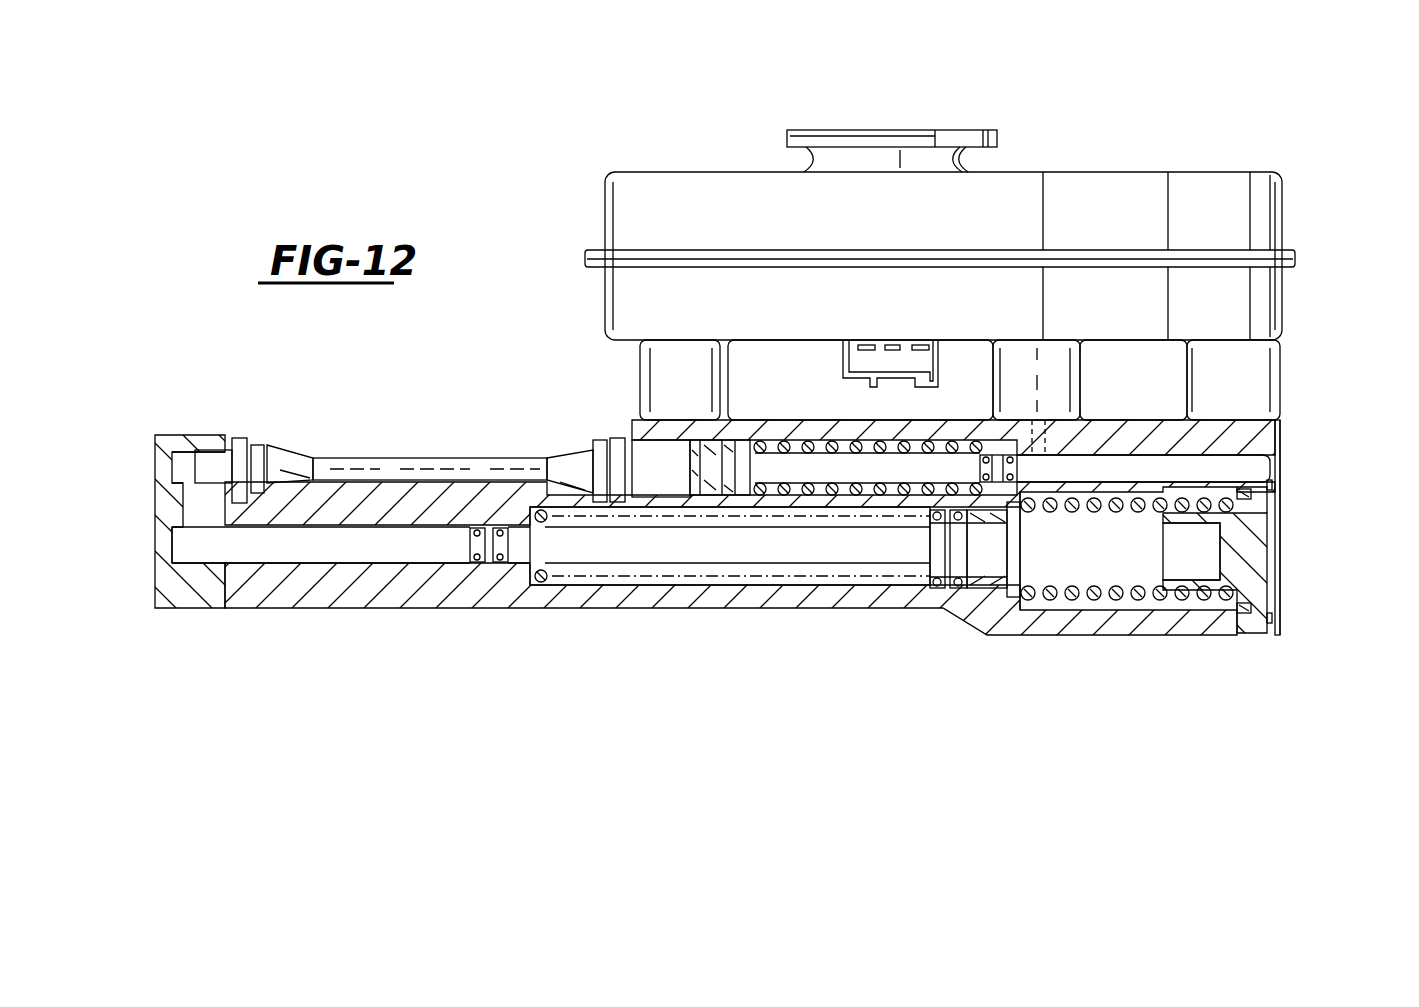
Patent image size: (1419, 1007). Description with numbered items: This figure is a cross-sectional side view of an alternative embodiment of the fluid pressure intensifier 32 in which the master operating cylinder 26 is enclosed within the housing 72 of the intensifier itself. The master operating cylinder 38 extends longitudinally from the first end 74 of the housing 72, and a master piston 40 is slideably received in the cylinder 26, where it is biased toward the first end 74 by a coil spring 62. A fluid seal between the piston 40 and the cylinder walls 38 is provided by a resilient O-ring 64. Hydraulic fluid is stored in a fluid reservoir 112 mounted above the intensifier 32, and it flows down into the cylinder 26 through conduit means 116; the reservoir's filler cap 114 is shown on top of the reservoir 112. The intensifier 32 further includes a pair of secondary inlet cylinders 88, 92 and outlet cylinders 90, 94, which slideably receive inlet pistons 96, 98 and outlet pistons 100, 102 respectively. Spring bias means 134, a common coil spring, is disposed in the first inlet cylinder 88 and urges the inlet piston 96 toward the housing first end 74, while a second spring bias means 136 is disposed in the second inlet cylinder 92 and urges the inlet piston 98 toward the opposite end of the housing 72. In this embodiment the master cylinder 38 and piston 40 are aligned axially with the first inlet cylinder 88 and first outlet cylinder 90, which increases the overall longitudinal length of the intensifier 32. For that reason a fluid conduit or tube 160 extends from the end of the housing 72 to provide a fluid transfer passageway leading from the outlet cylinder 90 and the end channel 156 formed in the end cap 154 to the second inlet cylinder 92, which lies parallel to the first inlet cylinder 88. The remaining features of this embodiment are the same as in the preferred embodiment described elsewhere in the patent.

The master operating cylinder 26 is at (1292, 578).
The fluid pressure intensifier 32 is at (1260, 146).
The master operating cylinder 38 is at (1060, 601).
The master piston 40 is at (1250, 527).
The coil spring 62 is at (1172, 596).
The resilient O-ring 64 is at (1240, 620).
The housing 72 is at (718, 617).
The first end 74 is at (1274, 503).
The first inlet cylinder 88 is at (798, 574).
The first outlet cylinder 90 is at (347, 563).
The second inlet cylinder 92 is at (800, 447).
The second outlet cylinder 94 is at (1275, 462).
The inlet piston 96 is at (933, 590).
The inlet piston 98 is at (737, 440).
The outlet piston 100 is at (485, 563).
The outlet piston 102 is at (995, 455).
The fluid reservoir 112 is at (1283, 228).
The filler cap 114 is at (970, 130).
The conduit means 116 is at (640, 355).
The spring bias means 134 is at (548, 578).
The spring bias means 136 is at (857, 440).
The end cap 154 is at (156, 583).
The end channel 156 is at (168, 516).
The fluid conduit or tube 160 is at (420, 458).